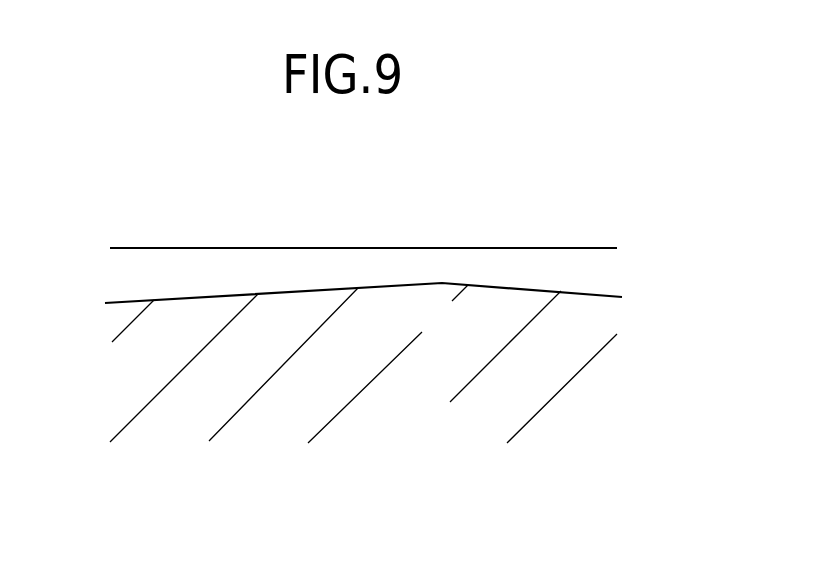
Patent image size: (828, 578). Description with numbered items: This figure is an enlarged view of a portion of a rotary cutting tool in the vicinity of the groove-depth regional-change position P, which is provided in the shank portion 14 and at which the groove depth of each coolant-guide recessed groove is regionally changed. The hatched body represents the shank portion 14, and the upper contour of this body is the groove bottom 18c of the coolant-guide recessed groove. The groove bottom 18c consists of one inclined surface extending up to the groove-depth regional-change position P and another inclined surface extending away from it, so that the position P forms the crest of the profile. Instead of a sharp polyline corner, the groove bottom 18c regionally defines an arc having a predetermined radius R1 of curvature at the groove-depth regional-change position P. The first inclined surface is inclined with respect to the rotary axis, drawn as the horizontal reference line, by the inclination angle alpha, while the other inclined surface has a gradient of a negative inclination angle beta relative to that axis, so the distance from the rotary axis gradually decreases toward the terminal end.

The groove bottom 18c is at (323, 288).
The groove-depth regional-change position P is at (442, 283).
The shank portion 14 is at (197, 417).
The radius of curvature R1 is at (442, 285).
The inclination angle alpha is at (185, 310).
The negative inclination angle beta is at (582, 307).